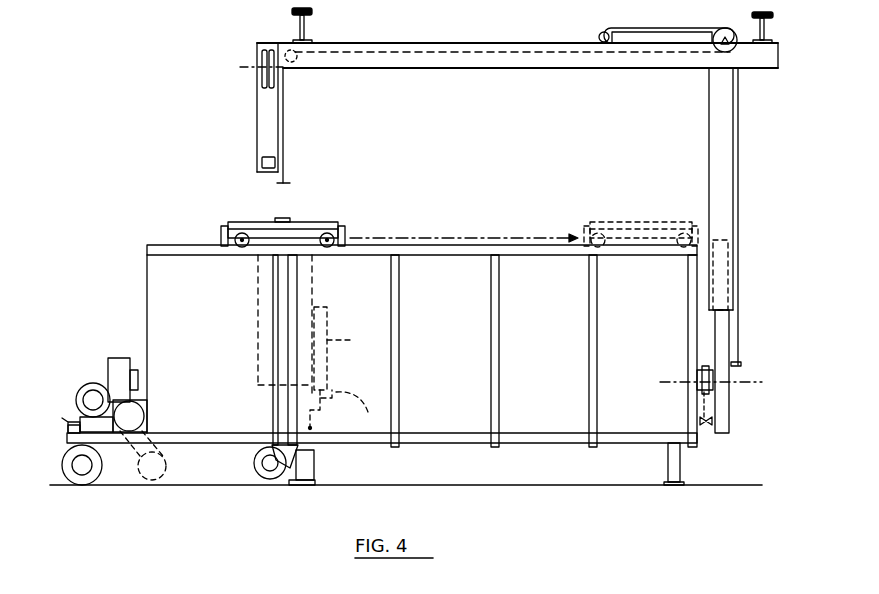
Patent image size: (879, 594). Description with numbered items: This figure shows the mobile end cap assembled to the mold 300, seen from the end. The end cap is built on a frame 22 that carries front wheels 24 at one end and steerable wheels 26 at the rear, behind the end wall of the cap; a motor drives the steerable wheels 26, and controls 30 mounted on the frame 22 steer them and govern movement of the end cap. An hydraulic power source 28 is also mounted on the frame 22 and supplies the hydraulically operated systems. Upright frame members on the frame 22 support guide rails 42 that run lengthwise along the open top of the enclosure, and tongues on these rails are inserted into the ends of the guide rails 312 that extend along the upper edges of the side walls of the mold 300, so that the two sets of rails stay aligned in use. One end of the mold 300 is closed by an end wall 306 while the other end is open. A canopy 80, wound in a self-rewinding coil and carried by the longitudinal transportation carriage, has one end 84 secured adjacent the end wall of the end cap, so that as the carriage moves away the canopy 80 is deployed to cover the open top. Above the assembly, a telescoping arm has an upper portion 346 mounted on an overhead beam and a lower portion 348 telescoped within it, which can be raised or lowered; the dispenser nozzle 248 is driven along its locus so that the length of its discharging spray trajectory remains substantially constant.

The frame 22 is at (216, 443).
The front wheels 24 is at (266, 484).
The steerable wheels 26 is at (83, 486).
The hydraulic power source 28 is at (92, 383).
The controls 30 is at (70, 428).
The guide rails 42 is at (208, 255).
The canopy 80 is at (190, 243).
The canopy end 84 is at (146, 245).
The dispenser nozzle 248 is at (348, 370).
The mold 300 is at (572, 462).
The end wall 306 is at (690, 324).
The guide rails 312 is at (357, 255).
The upper portion 346 is at (718, 157).
The lower portion 348 is at (722, 418).